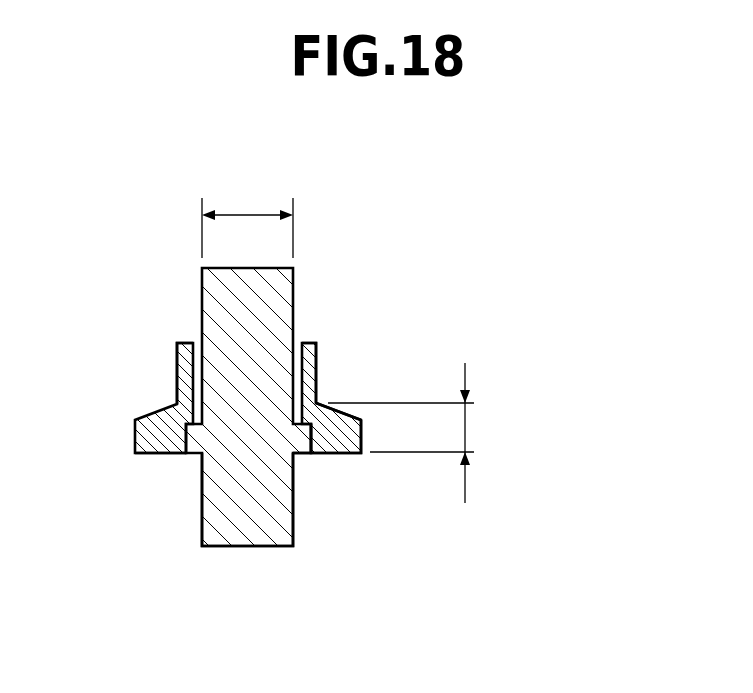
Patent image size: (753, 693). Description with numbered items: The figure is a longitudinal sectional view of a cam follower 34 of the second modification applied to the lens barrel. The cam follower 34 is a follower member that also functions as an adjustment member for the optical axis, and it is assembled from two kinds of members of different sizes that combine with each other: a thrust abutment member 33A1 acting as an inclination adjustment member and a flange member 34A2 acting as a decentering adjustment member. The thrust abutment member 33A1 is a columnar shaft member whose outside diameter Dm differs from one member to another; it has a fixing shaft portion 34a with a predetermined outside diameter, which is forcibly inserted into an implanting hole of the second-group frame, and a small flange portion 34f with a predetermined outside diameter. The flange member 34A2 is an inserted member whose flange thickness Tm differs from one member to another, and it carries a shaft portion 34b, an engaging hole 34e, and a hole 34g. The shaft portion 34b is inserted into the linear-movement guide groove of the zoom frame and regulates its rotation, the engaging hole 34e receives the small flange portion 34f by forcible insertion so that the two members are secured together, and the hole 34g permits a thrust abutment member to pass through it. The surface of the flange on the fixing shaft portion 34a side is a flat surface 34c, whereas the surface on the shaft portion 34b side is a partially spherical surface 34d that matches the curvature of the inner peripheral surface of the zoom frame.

The cam follower 34 is at (155, 298).
The insertion portion of pin engaging hole 33A1, 33B1, 33C1, 33D1 33A1 is at (296, 294).
The fixing shaft portion 34a is at (200, 510).
The shaft portion 34b is at (317, 362).
The flat surface 34c is at (145, 455).
The partially spherical surface 34d is at (328, 405).
The engaging hole 34e is at (314, 440).
The small flange portion 34f is at (313, 451).
The hole 34g is at (187, 370).
The flange member 34A2 is at (366, 437).
The outside diameter Dm is at (249, 213).
The flange thickness Tm is at (466, 430).